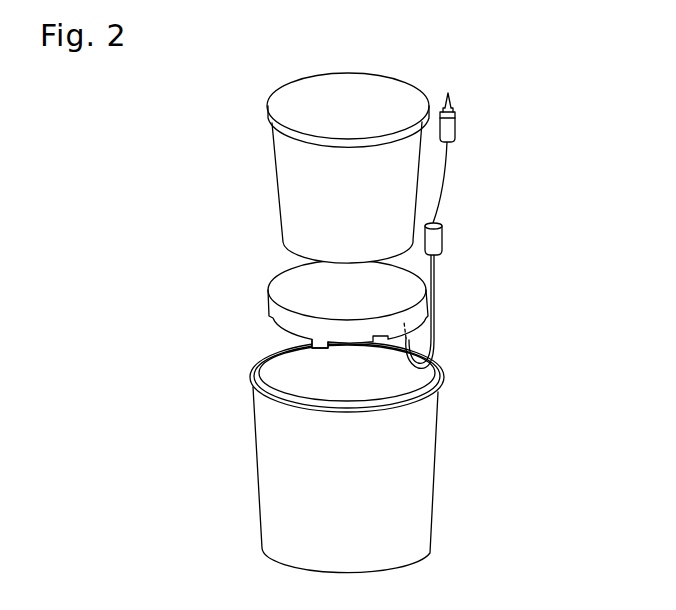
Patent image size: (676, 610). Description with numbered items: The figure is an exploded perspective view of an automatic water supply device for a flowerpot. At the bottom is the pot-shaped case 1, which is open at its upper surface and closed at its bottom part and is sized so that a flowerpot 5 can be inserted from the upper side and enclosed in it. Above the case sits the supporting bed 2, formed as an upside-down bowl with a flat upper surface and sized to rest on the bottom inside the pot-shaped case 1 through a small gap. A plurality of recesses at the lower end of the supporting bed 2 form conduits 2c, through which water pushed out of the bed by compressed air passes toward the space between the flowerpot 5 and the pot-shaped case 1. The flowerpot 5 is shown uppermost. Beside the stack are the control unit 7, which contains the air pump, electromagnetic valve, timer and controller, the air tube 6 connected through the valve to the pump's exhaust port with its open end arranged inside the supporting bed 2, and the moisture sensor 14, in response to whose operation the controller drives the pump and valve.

The pot-shaped case 1 is at (437, 447).
The supporting bed 2 is at (297, 281).
The conduits 2c is at (257, 356).
The flowerpot 5 is at (290, 153).
The air tube 6 is at (435, 275).
The control unit 7 is at (437, 238).
The moisture sensor 14 is at (445, 125).